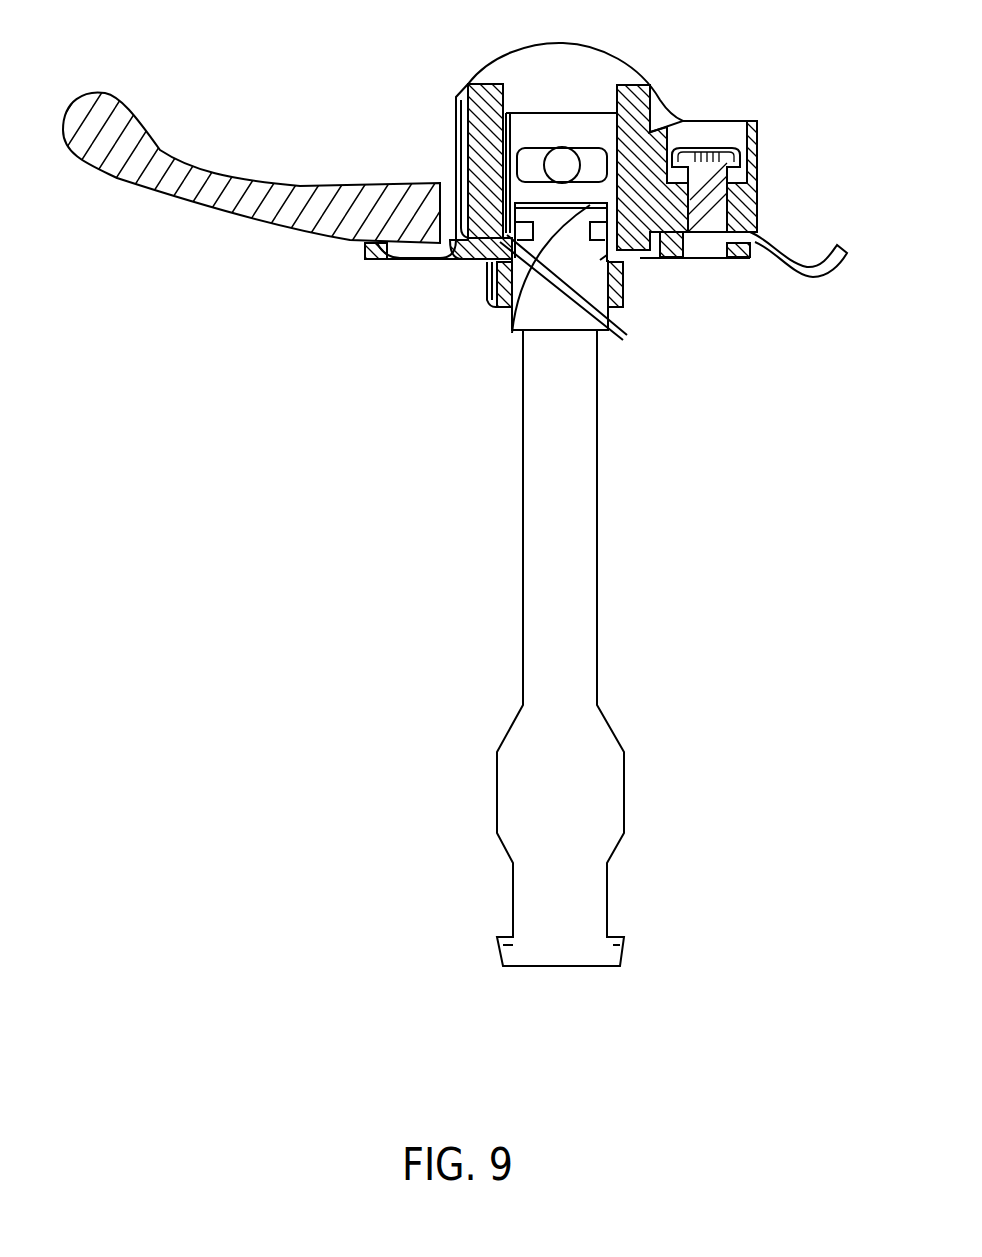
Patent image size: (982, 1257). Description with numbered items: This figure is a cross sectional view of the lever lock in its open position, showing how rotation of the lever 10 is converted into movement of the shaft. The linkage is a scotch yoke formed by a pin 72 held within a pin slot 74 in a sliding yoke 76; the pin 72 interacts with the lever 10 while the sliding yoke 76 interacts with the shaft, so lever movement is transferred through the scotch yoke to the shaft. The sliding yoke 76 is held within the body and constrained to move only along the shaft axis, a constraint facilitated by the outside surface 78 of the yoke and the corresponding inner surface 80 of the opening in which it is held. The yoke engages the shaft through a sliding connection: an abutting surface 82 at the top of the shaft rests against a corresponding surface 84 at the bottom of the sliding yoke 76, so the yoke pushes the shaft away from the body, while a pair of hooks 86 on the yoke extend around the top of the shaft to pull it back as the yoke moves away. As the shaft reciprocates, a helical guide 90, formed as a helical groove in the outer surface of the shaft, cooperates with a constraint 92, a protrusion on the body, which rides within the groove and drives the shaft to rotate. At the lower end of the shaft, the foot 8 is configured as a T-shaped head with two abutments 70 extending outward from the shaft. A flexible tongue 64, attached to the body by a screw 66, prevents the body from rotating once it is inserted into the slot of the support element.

The foot 8 is at (630, 1011).
The lever 10 is at (248, 188).
The flexible tongue 64 is at (830, 263).
The screw 66 is at (732, 158).
The abutments 70 is at (517, 955).
The pin 72 is at (560, 170).
The pin slot 74 is at (512, 310).
The sliding yoke 76 is at (587, 122).
The outside surface 78 is at (500, 128).
The inner surface 80 is at (510, 142).
The abutting surface 82 is at (520, 233).
The surface 84 is at (520, 205).
The hooks 86 is at (477, 283).
The helical guide 90 is at (605, 258).
The constraint 92 is at (600, 262).